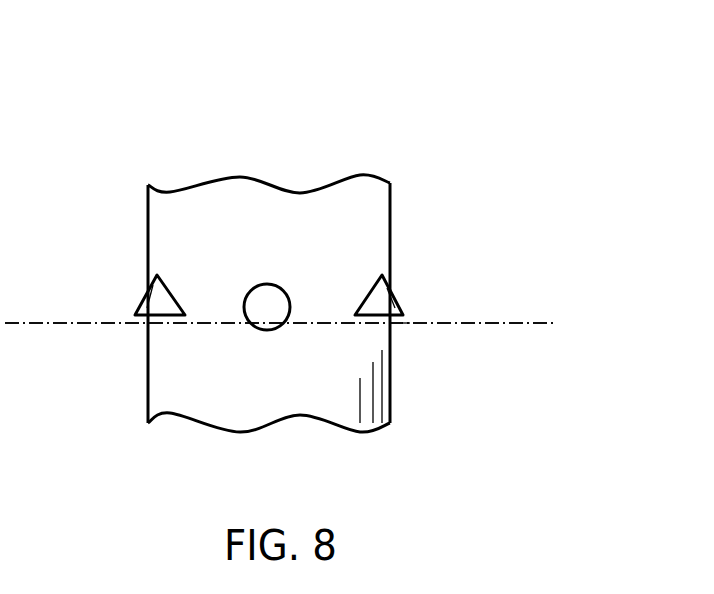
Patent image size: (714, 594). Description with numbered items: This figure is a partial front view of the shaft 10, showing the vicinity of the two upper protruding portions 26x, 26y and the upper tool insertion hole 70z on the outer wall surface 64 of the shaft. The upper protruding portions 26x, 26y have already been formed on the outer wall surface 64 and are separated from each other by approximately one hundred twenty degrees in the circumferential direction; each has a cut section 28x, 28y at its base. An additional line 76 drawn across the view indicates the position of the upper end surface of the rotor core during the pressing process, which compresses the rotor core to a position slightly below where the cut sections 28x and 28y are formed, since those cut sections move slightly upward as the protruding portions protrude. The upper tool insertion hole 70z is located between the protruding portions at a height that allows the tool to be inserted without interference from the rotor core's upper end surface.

The shaft 10 is at (370, 127).
The outer wall surface 64 is at (370, 225).
The upper tool insertion hole 70z is at (262, 300).
The upper protruding portion 26x is at (137, 302).
The upper protruding portion 26y is at (400, 292).
The cut section 28x is at (138, 323).
The cut section 28y is at (402, 323).
The additional line 76 is at (518, 323).